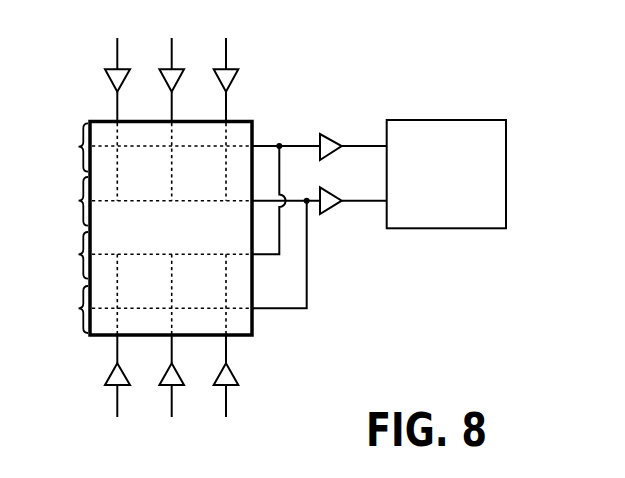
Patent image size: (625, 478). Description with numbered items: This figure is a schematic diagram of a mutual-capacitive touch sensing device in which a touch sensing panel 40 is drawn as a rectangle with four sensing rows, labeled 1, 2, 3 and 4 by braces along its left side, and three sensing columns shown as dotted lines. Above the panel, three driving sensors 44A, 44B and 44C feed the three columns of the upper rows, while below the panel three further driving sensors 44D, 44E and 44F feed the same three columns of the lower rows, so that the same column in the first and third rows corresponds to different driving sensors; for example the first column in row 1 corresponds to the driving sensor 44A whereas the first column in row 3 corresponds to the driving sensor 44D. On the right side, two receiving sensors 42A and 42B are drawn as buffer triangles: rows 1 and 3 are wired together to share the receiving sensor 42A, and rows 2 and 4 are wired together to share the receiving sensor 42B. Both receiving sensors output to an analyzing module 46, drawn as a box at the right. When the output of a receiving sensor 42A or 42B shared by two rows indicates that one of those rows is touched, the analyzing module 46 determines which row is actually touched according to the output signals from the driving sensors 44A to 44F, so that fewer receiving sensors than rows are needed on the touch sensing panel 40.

The touch sensing panel 40 is at (90, 122).
The row 1 is at (73, 147).
The row 2 is at (73, 201).
The row 3 is at (73, 255).
The row 4 is at (73, 309).
The driving sensor 44A is at (105, 69).
The driving sensor 44B is at (160, 69).
The driving sensor 44C is at (214, 69).
The driving sensor 44D is at (105, 385).
The driving sensor 44E is at (160, 385).
The driving sensor 44F is at (214, 385).
The receiving sensor 42A is at (332, 139).
The receiving sensor 42B is at (332, 193).
The analyzing module 46 is at (463, 120).